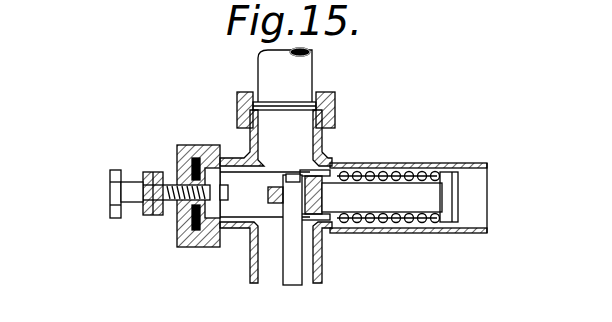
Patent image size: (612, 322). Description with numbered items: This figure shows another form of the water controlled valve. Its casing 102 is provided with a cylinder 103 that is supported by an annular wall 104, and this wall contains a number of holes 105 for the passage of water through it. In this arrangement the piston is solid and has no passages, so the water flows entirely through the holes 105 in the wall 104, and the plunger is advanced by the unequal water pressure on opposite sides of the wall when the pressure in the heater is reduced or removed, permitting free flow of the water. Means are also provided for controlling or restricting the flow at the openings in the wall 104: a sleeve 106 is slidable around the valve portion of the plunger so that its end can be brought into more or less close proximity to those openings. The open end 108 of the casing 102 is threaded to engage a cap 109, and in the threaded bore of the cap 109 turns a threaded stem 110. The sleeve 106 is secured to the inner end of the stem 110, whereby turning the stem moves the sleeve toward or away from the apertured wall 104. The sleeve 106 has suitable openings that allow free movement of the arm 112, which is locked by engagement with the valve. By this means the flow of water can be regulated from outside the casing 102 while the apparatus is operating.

The casing 102 is at (366, 230).
The cylinder 103 is at (393, 166).
The annular wall 104 is at (340, 170).
The holes 105 is at (342, 238).
The sleeve 106 is at (293, 300).
The open end 108 is at (228, 155).
The cap 109 is at (181, 240).
The threaded stem 110 is at (110, 191).
The arm 112 is at (244, 208).